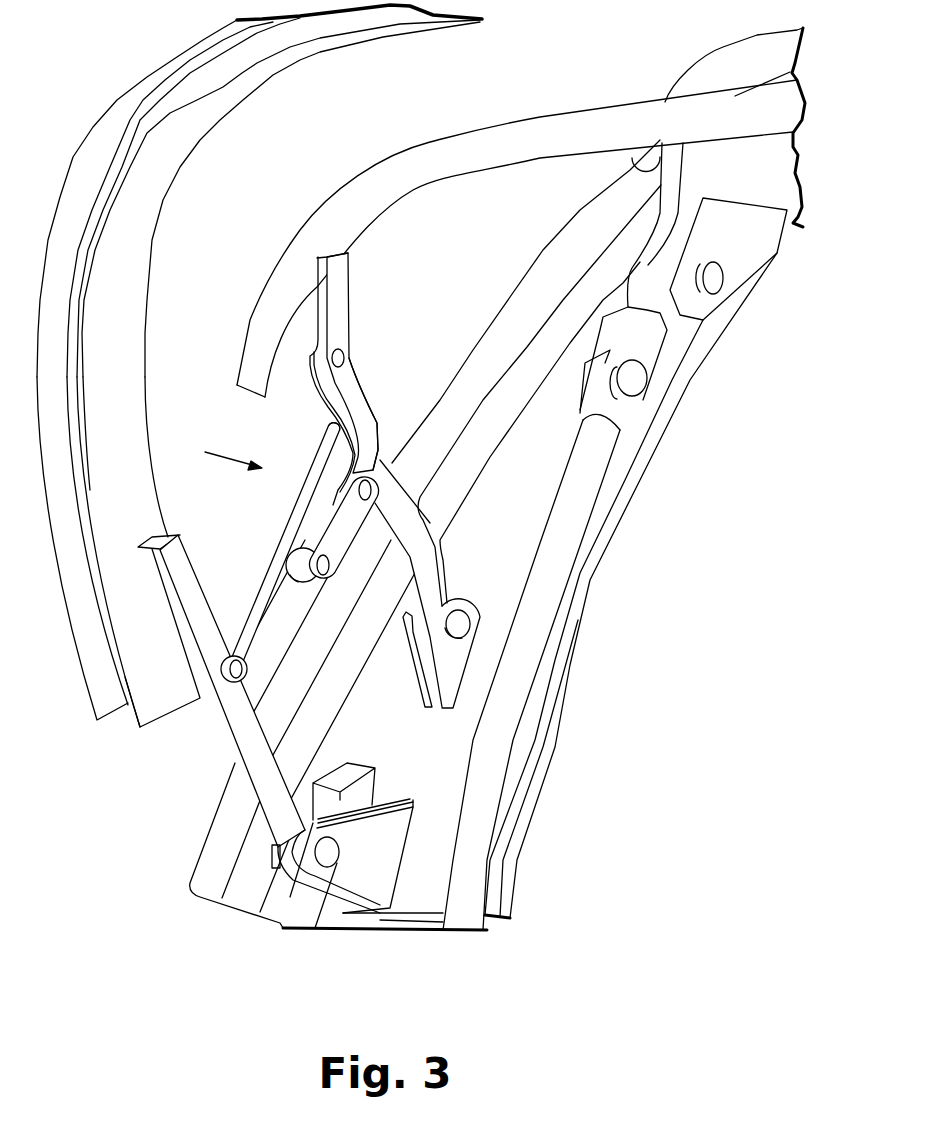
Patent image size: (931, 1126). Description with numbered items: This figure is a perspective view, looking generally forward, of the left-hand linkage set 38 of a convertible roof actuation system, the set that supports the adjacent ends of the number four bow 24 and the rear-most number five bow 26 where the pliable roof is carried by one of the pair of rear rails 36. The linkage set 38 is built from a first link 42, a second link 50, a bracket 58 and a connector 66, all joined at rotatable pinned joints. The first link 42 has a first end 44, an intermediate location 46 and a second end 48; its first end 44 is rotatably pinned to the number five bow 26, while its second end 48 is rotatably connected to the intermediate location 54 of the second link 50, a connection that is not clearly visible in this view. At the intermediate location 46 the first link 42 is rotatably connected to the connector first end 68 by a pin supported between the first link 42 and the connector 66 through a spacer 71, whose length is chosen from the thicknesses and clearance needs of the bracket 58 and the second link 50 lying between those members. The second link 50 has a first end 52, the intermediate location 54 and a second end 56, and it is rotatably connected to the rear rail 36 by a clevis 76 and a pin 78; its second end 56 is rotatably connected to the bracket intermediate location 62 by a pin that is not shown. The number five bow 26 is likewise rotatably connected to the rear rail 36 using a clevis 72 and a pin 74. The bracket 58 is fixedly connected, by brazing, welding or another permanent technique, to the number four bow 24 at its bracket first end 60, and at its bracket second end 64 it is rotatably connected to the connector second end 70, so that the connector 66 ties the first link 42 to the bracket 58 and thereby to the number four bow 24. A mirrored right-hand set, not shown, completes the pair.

The number four bow 24 is at (385, 183).
The number five bow 26 is at (164, 688).
The rear rail 36 is at (475, 375).
The linkage set 38 is at (213, 451).
The first link 42 is at (260, 580).
The first end 44 is at (233, 657).
The intermediate location 46 is at (290, 548).
The second end 48 is at (328, 445).
The second link 50 is at (422, 498).
The first end 52 is at (437, 597).
The intermediate location 54 is at (342, 435).
The second end 56 is at (318, 395).
The bracket 58 is at (335, 300).
The bracket first end 60 is at (348, 252).
The bracket intermediate location 62 is at (343, 363).
The bracket second end 64 is at (368, 442).
The connector 66 is at (342, 530).
The connector first end 68 is at (317, 588).
The connector second end 70 is at (377, 472).
The spacer 71 is at (298, 570).
The clevis 72 is at (272, 853).
The pin 74 is at (282, 927).
The clevis 76 is at (460, 648).
The pin 78 is at (458, 623).